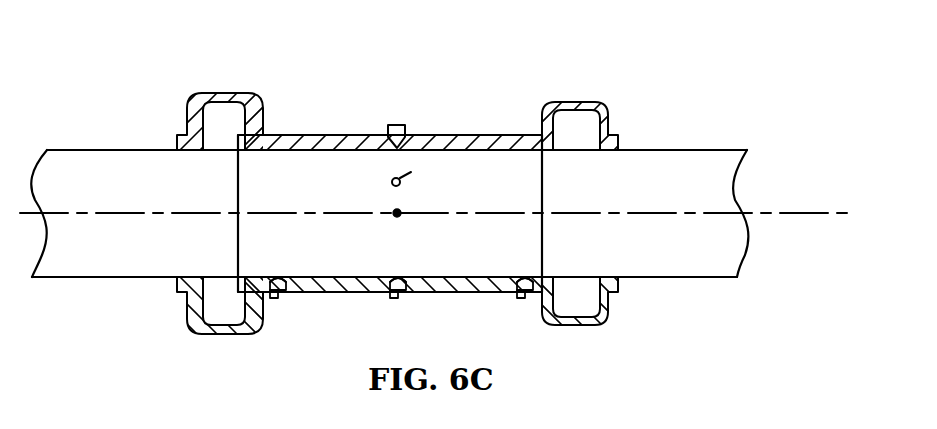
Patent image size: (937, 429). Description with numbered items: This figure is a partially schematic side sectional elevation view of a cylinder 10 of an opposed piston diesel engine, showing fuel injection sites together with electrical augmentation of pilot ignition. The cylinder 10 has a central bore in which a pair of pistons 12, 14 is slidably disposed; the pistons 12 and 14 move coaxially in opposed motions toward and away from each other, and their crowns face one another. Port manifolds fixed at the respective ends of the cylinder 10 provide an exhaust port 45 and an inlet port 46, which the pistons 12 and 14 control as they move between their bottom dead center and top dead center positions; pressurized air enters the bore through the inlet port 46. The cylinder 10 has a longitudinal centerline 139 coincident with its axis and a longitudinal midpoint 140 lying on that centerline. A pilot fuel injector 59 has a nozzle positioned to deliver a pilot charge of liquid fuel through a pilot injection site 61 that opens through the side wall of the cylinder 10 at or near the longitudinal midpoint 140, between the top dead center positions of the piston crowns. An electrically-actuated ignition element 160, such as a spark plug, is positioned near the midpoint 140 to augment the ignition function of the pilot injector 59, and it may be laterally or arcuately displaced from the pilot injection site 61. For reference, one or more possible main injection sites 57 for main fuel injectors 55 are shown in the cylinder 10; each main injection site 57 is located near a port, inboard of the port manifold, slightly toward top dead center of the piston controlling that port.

The cylinder 10 is at (306, 135).
The piston 12 is at (95, 278).
The piston 14 is at (672, 277).
The exhaust port 45 is at (216, 135).
The inlet port 46 is at (570, 128).
The main fuel injector 55 is at (288, 297).
The main injection site 57 is at (278, 277).
The pilot fuel injector 59 is at (398, 125).
The pilot injection site 61 is at (398, 150).
The longitudinal centerline 139 is at (782, 213).
The longitudinal midpoint 140 is at (397, 218).
The electrically-actuated ignition element 160 is at (432, 172).